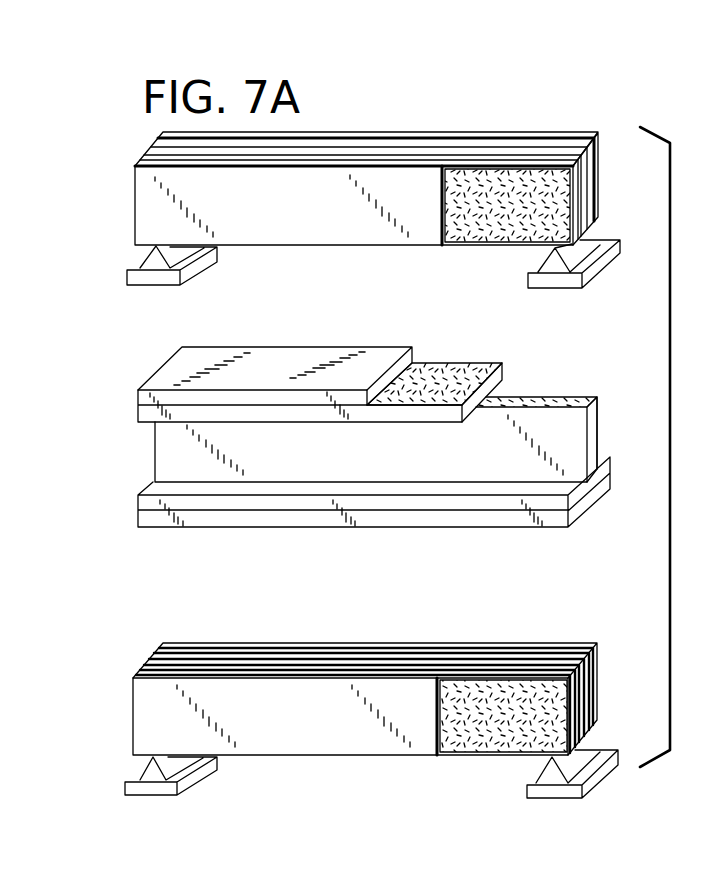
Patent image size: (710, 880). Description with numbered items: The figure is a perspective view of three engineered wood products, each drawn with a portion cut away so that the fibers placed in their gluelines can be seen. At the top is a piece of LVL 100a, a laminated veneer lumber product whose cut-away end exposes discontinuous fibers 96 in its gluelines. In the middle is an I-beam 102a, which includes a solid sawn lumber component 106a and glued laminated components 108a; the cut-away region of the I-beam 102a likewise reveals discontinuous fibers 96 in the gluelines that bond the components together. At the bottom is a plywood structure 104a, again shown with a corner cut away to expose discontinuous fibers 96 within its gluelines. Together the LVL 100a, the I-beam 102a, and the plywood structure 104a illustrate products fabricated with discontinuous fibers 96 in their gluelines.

The LVL 100a is at (363, 128).
The discontinuous fibers 96 is at (542, 178).
The I-beam 102a is at (399, 394).
The solid sawn lumber component 106a is at (594, 420).
The glued laminated component 108a is at (134, 405).
The plywood structure 104a is at (281, 636).